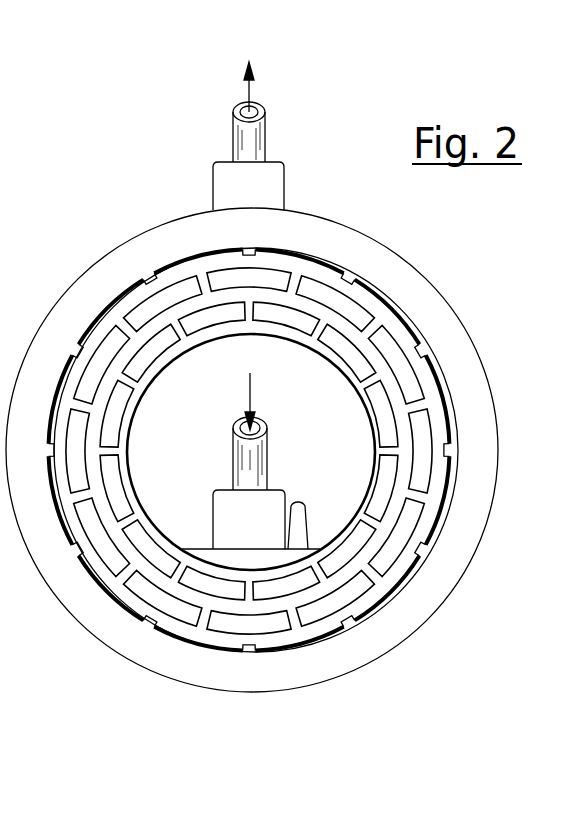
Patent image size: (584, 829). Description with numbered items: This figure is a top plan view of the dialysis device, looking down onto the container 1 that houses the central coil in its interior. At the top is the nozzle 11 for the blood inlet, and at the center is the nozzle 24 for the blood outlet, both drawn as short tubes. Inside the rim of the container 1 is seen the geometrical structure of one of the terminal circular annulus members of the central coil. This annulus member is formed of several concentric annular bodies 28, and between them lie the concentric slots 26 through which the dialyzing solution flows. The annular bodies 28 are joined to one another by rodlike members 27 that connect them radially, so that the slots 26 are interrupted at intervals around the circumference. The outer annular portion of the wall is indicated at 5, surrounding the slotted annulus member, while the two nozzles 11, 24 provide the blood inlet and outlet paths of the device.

The container 1 is at (499, 447).
The outer annular rim 5 is at (478, 508).
The blood inlet nozzle 11 is at (250, 138).
The blood outlet nozzle 24 is at (253, 457).
The concentric slots 26 is at (160, 305).
The rodlike members 27 is at (203, 280).
The concentric annular bodies 28 is at (324, 277).